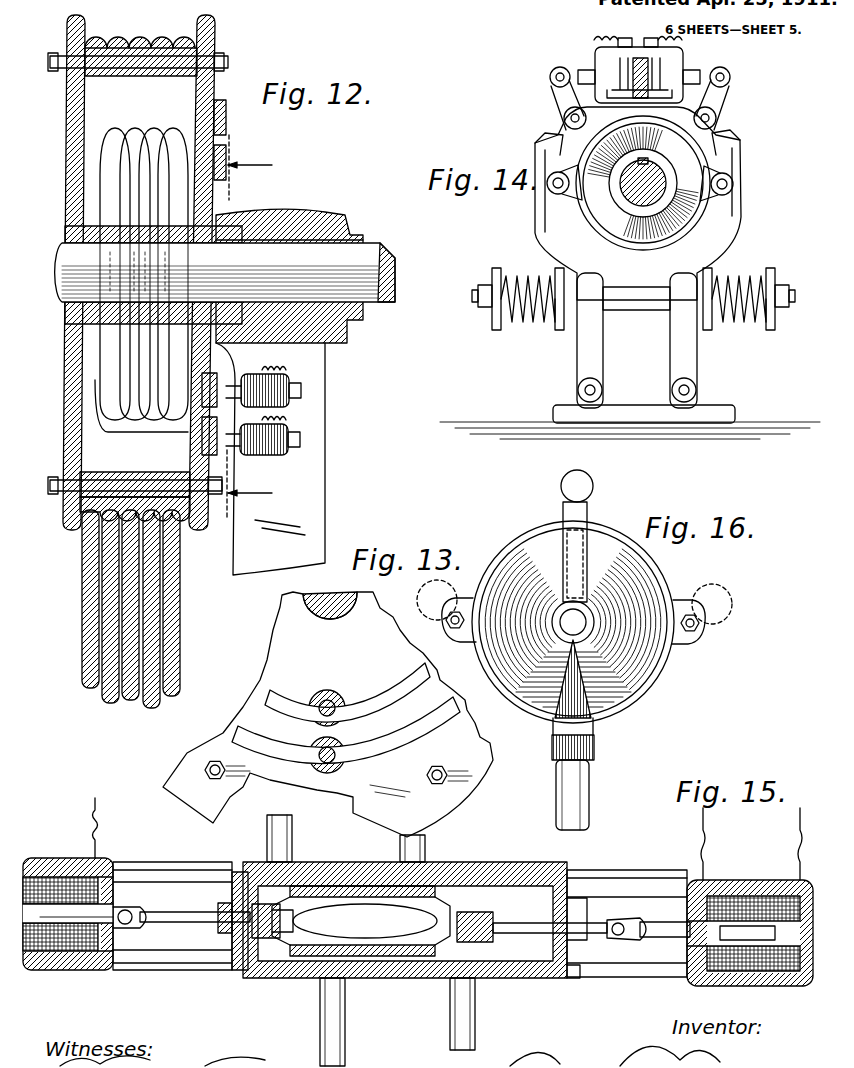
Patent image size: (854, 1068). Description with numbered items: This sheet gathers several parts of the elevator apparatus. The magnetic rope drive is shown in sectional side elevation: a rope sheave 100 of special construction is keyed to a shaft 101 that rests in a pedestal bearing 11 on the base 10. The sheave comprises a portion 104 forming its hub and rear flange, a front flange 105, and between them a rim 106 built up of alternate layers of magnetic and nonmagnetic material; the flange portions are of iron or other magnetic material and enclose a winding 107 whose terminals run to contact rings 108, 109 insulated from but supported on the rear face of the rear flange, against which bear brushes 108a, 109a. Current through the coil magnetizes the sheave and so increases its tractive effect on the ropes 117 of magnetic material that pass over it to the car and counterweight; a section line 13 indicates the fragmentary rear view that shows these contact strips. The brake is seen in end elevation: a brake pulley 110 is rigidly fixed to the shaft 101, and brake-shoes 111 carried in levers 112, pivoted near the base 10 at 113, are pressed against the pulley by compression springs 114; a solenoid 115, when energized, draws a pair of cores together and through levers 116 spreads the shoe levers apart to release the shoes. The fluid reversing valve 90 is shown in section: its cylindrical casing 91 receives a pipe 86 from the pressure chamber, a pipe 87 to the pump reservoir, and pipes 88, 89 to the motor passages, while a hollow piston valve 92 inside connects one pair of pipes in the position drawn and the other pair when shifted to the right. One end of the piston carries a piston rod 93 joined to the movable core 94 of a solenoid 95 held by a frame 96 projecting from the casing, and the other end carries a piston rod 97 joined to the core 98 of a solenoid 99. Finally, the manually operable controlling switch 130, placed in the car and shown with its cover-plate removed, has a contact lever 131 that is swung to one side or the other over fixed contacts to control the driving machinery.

In FIG. 14, the base 10 is at (630, 413).
In FIG. 12, the pedestal bearing 11 is at (285, 459).
In FIG. 12, the section line of Fig. 13 is at (263, 327).
In FIG. 15, the pipe 86 is at (479, 1014).
In FIG. 15, the pipe 87 is at (351, 1022).
In FIG. 15, the pipe 88 is at (434, 847).
In FIG. 15, the pipe 89 is at (252, 838).
In FIG. 15, the reversing valve 90 is at (589, 911).
In FIG. 15, the cylindrical casing 91 is at (402, 939).
In FIG. 15, the hollow piston valve 92 is at (351, 899).
In FIG. 15, the piston rod 93 is at (195, 932).
In FIG. 15, the movable core 94 is at (106, 909).
In FIG. 15, the solenoid 95 is at (68, 884).
In FIG. 15, the frame 96 is at (172, 938).
In FIG. 15, the piston rod 97 is at (532, 938).
In FIG. 15, the core 98 is at (648, 918).
In FIG. 15, the solenoid 99 is at (750, 913).
In FIG. 12, the rope sheave 100 is at (163, 54).
In FIG. 12, the shaft 101 is at (225, 293).
In FIG. 14, the shaft 101 is at (640, 217).
In FIG. 12, the hub and rear flange portion 104 is at (214, 262).
In FIG. 12, the front flange 105 is at (119, 272).
In FIG. 12, the rim 106 is at (123, 590).
In FIG. 12, the winding 107 is at (141, 267).
In FIG. 12, the contact ring 108 is at (247, 327).
In FIG. 13, the contact ring 108 is at (347, 694).
In FIG. 12, the brush 108a is at (251, 374).
In FIG. 12, the contact ring 109 is at (243, 117).
In FIG. 13, the contact ring 109 is at (346, 735).
In FIG. 12, the brush 109a is at (251, 454).
In FIG. 14, the brake pulley 110 is at (643, 180).
In FIG. 14, the brake-shoe 111 is at (648, 159).
In FIG. 14, the lever 112 is at (646, 203).
In FIG. 14, the pivot 113 is at (637, 340).
In FIG. 14, the compression spring 114 is at (633, 315).
In FIG. 14, the solenoid 115 is at (680, 70).
In FIG. 14, the lever 116 is at (662, 98).
In FIG. 12, the ropes or cables 117 is at (204, 615).
In FIG. 16, the controlling switch 130 is at (574, 657).
In FIG. 16, the contact lever 131 is at (591, 536).